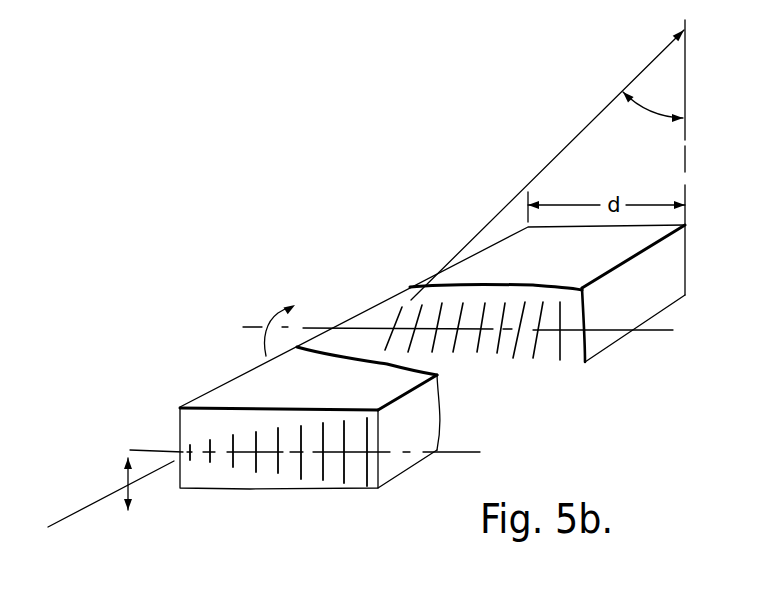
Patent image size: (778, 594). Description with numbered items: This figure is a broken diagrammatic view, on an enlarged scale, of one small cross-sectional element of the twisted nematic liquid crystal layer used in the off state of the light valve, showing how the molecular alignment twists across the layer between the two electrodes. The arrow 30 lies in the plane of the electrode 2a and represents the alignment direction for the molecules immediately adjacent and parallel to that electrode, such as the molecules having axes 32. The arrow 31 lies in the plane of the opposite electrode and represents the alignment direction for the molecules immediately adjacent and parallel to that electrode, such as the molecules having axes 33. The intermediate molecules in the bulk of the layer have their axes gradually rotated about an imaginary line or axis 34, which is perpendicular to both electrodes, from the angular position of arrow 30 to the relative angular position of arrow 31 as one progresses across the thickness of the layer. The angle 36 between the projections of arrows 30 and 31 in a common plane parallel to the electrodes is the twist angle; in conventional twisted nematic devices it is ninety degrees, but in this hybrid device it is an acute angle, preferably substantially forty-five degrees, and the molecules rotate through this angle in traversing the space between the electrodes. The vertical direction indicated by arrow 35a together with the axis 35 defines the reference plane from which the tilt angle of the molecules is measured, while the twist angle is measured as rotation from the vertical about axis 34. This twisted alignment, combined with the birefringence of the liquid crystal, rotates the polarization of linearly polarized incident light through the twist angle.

The electrode 2a is at (187, 430).
The arrow 30 is at (632, 80).
The arrow 31 is at (685, 100).
The molecule axes 32 is at (392, 317).
The molecule axes 33 is at (558, 352).
The imaginary line or axis 34 is at (253, 326).
The axis 35 is at (85, 505).
The vertical arrow 35a is at (127, 477).
The angle 36 is at (653, 117).